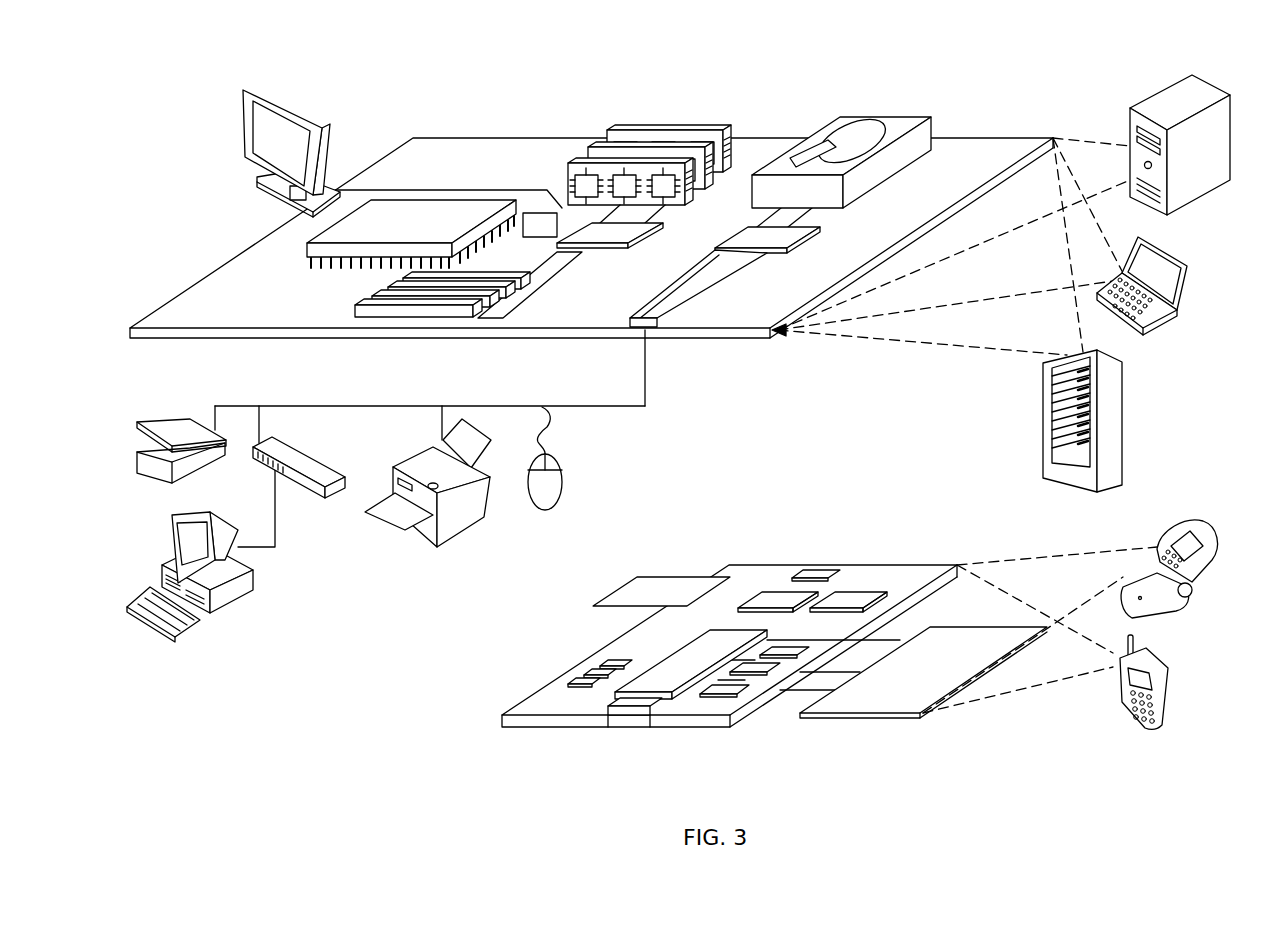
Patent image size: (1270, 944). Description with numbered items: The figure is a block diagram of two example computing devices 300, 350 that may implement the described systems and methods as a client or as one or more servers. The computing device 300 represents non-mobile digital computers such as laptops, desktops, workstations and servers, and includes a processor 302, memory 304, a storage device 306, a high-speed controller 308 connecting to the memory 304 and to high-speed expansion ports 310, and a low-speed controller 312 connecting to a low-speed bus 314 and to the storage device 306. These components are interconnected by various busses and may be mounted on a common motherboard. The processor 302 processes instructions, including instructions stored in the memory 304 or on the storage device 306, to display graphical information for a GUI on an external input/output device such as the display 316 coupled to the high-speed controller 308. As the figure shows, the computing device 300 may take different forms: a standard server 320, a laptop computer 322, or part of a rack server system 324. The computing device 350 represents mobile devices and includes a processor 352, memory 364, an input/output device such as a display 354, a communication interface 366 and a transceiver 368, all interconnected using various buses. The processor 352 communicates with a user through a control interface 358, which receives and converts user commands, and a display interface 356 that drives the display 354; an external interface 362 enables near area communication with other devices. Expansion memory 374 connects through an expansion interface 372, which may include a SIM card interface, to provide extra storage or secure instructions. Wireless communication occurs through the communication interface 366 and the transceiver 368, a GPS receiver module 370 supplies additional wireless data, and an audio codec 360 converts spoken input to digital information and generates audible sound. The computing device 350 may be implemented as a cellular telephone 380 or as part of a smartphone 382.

The computing device 300 is at (158, 104).
The processor 302 is at (313, 248).
The memory 304 is at (615, 127).
The storage device 306 is at (828, 120).
The high-speed controller 308 is at (585, 232).
The high-speed expansion ports 310 is at (377, 297).
The low-speed controller 312 is at (748, 232).
The low-speed bus 314 is at (657, 330).
The display 316 is at (243, 90).
The standard server 320 is at (1130, 123).
The laptop computer 322 is at (1190, 260).
The rack server system 324 is at (1043, 444).
The computing device 350 is at (476, 724).
The processor 352 is at (667, 686).
The display 354 is at (888, 703).
The display interface 356 is at (733, 696).
The control interface 358 is at (780, 666).
The audio codec 360 is at (783, 653).
The external interface 362 is at (635, 706).
The memory 364 is at (580, 682).
The communication interface 366 is at (778, 600).
The transceiver 368 is at (848, 602).
The GPS receiver module 370 is at (822, 573).
The expansion interface 372 is at (708, 576).
The expansion memory 374 is at (632, 578).
The cellular telephone 380 is at (1173, 527).
The smartphone 382 is at (1118, 687).